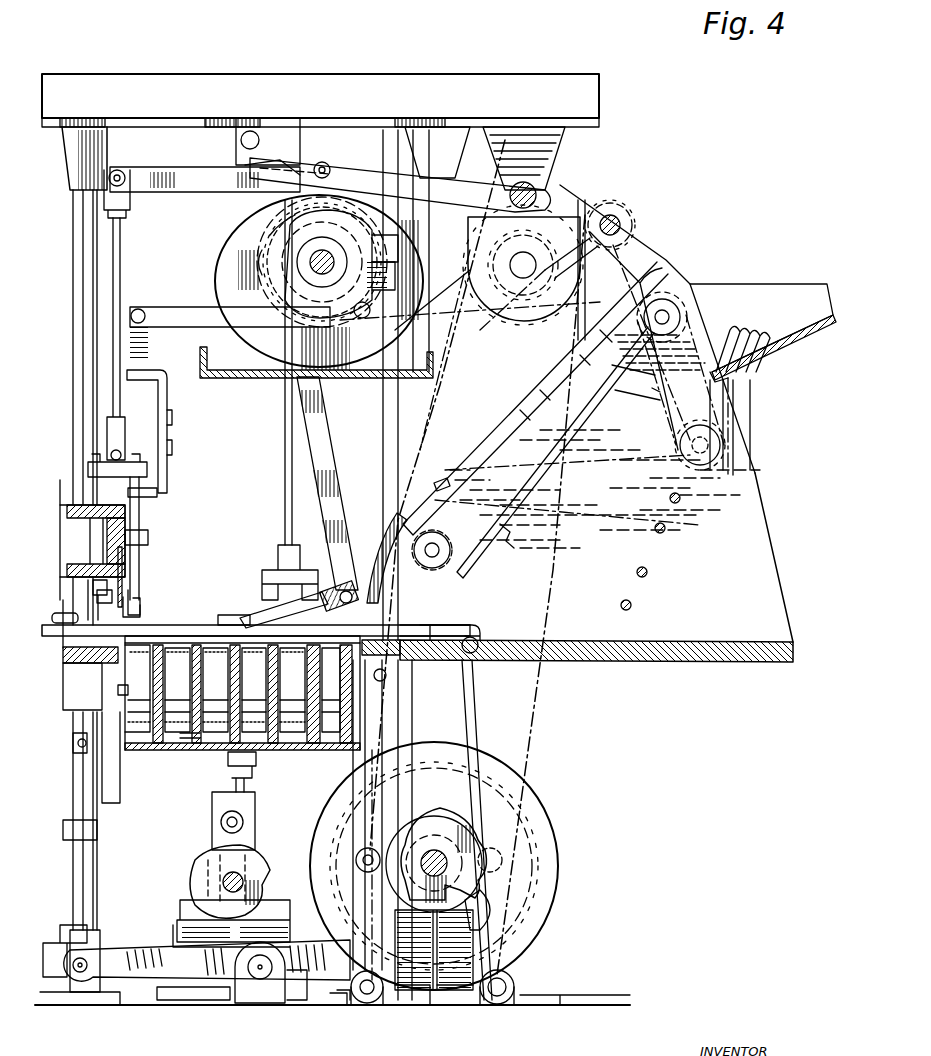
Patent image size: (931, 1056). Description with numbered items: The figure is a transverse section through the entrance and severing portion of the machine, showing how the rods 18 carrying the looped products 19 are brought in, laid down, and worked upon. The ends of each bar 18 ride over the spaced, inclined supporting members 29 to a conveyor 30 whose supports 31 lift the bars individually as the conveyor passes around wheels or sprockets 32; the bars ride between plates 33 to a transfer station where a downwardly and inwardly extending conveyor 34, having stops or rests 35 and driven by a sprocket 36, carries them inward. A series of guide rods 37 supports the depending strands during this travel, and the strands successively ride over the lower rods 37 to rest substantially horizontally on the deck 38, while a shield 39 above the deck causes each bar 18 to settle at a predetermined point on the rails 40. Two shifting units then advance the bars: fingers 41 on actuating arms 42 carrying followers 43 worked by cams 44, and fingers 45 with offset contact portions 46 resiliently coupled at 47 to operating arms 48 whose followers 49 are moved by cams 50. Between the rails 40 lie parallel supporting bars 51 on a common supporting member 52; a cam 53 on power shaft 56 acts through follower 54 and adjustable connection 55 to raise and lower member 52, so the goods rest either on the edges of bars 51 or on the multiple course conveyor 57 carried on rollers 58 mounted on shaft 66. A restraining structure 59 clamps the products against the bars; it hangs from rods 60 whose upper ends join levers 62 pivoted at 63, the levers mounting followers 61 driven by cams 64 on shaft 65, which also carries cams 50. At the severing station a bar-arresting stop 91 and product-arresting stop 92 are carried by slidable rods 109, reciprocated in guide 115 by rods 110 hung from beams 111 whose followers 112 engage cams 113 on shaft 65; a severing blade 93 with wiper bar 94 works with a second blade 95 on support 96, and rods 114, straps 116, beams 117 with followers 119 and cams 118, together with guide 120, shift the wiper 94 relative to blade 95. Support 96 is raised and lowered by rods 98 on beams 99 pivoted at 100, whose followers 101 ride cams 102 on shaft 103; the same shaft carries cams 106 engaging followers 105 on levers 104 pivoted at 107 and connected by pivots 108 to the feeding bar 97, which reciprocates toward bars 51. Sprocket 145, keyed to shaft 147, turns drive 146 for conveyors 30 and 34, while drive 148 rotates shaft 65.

The rod 18 is at (442, 480).
The looped product 19 is at (752, 410).
The inclined supporting member 29 is at (786, 347).
The conveyor 30 is at (666, 398).
The support 31 is at (656, 382).
The driving wheel or sprocket 32 is at (670, 298).
The plate 33 is at (668, 278).
The conveyor 34 is at (520, 410).
The stop or rest 35 is at (510, 540).
The wheel or sprocket 36 is at (452, 551).
The guide rod 37 is at (664, 526).
The deck 38 is at (708, 662).
The shield 39 is at (384, 512).
The guide or rail 40 is at (430, 628).
The finger 41 is at (462, 627).
The actuating arm 42 is at (478, 690).
The follower 43 is at (503, 861).
The cam 44 is at (515, 782).
The finger 45 is at (276, 615).
The offset forward contact portion 46 is at (233, 615).
The resilient coupling 47 is at (347, 585).
The operating arm 48 is at (322, 440).
The follower 49 is at (260, 266).
The cam 50 is at (222, 224).
The supporting bar 51 is at (172, 750).
The common supporting member 52 is at (187, 750).
The cam 53 is at (192, 872).
The follower 54 is at (220, 822).
The adjustable connection 55 is at (246, 788).
The power shaft 56 is at (245, 880).
The multiple course conveyor 57 is at (183, 640).
The roller 58 is at (238, 694).
The restraining structure 59 is at (266, 585).
The rod 60 is at (285, 500).
The follower 61 is at (305, 162).
The lever 62 is at (440, 166).
The pivot 63 is at (527, 183).
The cam 64 is at (398, 272).
The shaft 65 is at (326, 250).
The shaft 66 is at (118, 690).
The bar-arresting stop 91 is at (146, 592).
The product-arresting stop 92 is at (98, 596).
The severing blade 93 is at (93, 587).
The wiper bar 94 is at (127, 603).
The second blade 95 is at (60, 648).
The support 96 is at (72, 672).
The feeding bar 97 is at (392, 630).
The rod 98 is at (90, 900).
The beam 99 is at (133, 978).
The pivot 100 is at (258, 980).
The follower 101 is at (450, 995).
The cam 102 is at (545, 915).
The shaft 103 is at (428, 835).
The lever 104 is at (368, 755).
The follower 105 is at (345, 883).
The cam 106 is at (490, 838).
The pivot 107 is at (367, 995).
The pivot 108 is at (387, 675).
The slidably mounted rod 109 is at (96, 537).
The rod 110 is at (121, 353).
The beam 111 is at (185, 178).
The follower 112 is at (331, 173).
The cam 113 is at (396, 247).
The rod 114 is at (140, 556).
The guide 115 is at (150, 508).
The strap 116 is at (167, 428).
The beam 117 is at (173, 298).
The cam 118 is at (262, 250).
The follower 119 is at (337, 378).
The guide 120 is at (150, 537).
The sprocket 145 is at (537, 320).
The drive 146 is at (632, 210).
The shaft 147 is at (520, 278).
The drive 148 is at (425, 333).